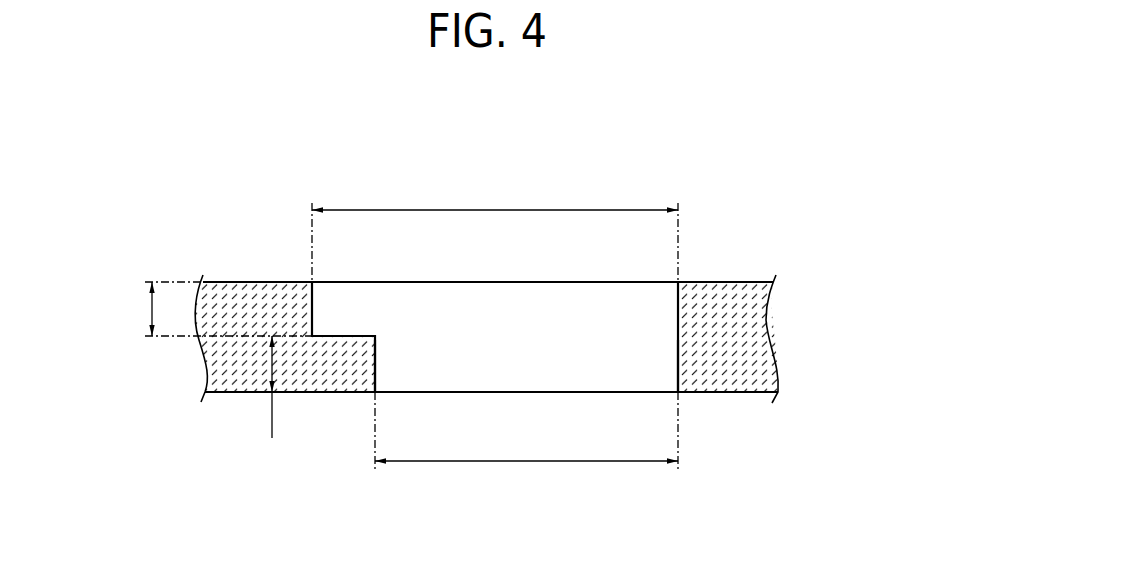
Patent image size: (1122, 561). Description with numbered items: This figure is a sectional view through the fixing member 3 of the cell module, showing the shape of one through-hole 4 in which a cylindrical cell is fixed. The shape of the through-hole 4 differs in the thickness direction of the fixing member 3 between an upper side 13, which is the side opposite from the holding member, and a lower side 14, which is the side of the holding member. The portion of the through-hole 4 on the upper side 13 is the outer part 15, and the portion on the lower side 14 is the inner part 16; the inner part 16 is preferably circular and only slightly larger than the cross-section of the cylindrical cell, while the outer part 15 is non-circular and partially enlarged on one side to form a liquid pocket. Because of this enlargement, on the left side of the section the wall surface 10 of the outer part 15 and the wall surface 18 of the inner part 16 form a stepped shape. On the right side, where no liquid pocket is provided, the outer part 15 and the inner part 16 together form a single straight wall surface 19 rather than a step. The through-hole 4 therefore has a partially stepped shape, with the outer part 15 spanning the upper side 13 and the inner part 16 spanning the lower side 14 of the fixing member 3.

The fixing member 3 is at (757, 340).
The through-hole 4 is at (508, 348).
The wall surface of the outer part 10 is at (312, 313).
The upper side 13 is at (217, 309).
The lower side 14 is at (273, 404).
The outer part 15 is at (495, 228).
The inner part 16 is at (526, 443).
The wall surface of the inner part 18 is at (375, 355).
The straight wall surface 19 is at (678, 353).